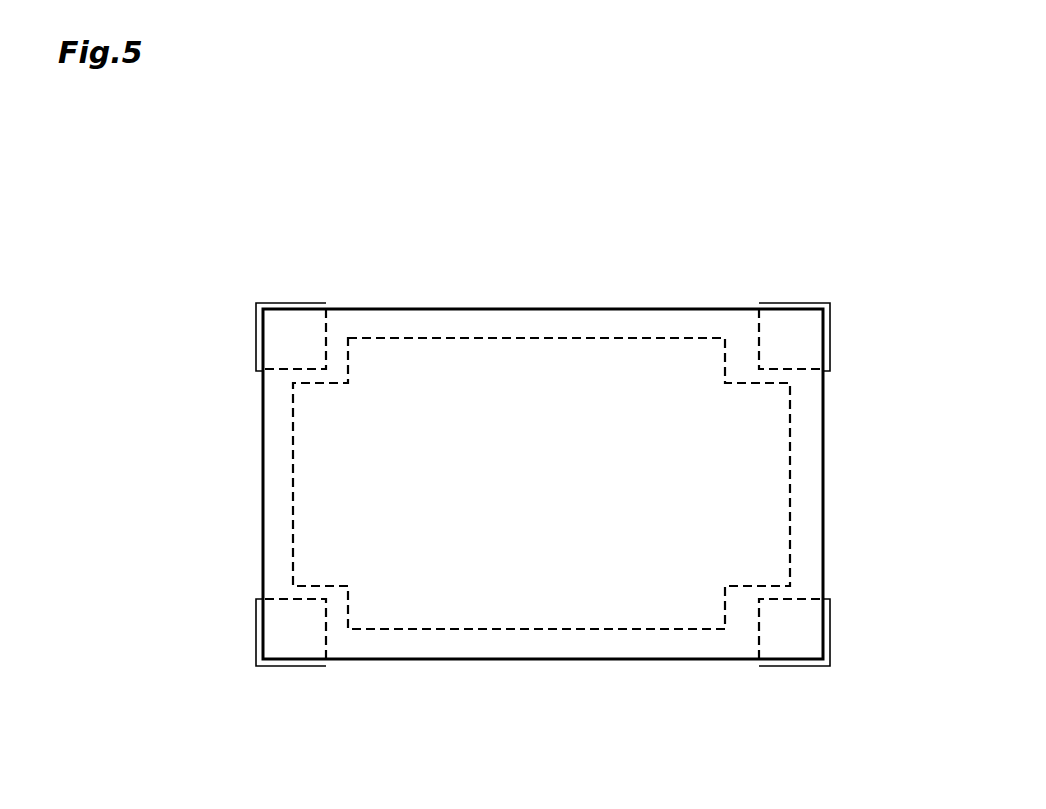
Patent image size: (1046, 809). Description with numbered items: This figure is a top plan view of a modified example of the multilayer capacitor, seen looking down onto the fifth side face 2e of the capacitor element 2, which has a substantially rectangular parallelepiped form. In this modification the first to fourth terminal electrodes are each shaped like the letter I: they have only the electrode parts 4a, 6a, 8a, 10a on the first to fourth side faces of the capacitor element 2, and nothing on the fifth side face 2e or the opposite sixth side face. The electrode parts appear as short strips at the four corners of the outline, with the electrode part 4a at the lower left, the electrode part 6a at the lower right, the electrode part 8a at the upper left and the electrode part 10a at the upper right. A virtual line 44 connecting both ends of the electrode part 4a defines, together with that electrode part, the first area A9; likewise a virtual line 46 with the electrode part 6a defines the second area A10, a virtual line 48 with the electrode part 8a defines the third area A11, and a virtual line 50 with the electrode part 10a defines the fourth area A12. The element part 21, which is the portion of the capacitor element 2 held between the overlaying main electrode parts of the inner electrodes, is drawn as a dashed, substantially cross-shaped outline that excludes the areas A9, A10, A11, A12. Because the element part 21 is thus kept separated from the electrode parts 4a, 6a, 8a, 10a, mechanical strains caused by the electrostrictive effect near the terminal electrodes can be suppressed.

The capacitor element 2 is at (558, 309).
The fifth side face 2e is at (800, 490).
The electrode part 8a is at (256, 337).
The electrode part 10a is at (830, 333).
The electrode part 4a is at (281, 666).
The electrode part 6a is at (805, 666).
The first area A9 is at (275, 627).
The second area A10 is at (807, 627).
The third area A11 is at (290, 330).
The fourth area A12 is at (800, 330).
The virtual line 44 is at (326, 632).
The virtual line 46 is at (757, 632).
The virtual line 48 is at (328, 339).
The virtual line 50 is at (755, 339).
The element part 21 is at (518, 548).